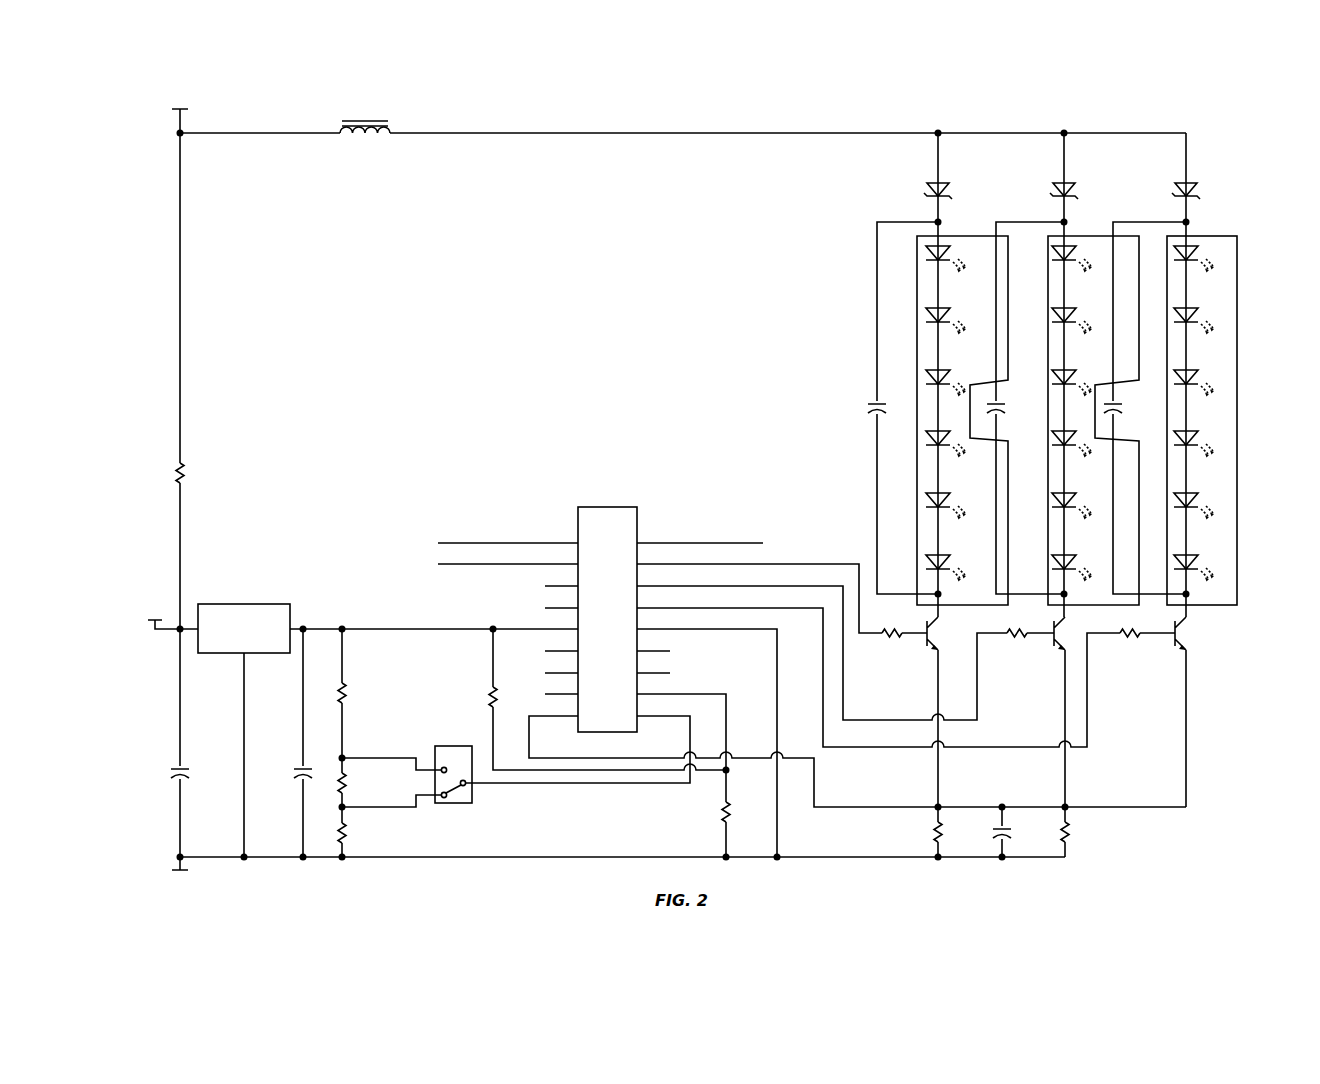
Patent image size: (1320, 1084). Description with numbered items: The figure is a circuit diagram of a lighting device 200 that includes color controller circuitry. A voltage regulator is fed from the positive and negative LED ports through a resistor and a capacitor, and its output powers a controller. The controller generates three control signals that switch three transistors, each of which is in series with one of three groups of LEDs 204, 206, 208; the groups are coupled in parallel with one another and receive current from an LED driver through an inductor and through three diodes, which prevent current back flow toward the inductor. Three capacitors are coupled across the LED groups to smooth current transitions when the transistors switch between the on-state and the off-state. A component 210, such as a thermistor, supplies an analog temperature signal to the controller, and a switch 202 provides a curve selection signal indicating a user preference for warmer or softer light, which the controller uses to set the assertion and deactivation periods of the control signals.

The lighting device 200 is at (1040, 129).
The switch 202 is at (452, 748).
The first group of LEDs 204 is at (1229, 607).
The second group of LEDs 206 is at (1089, 240).
The third group of LEDs 208 is at (965, 240).
The component 210 is at (721, 813).